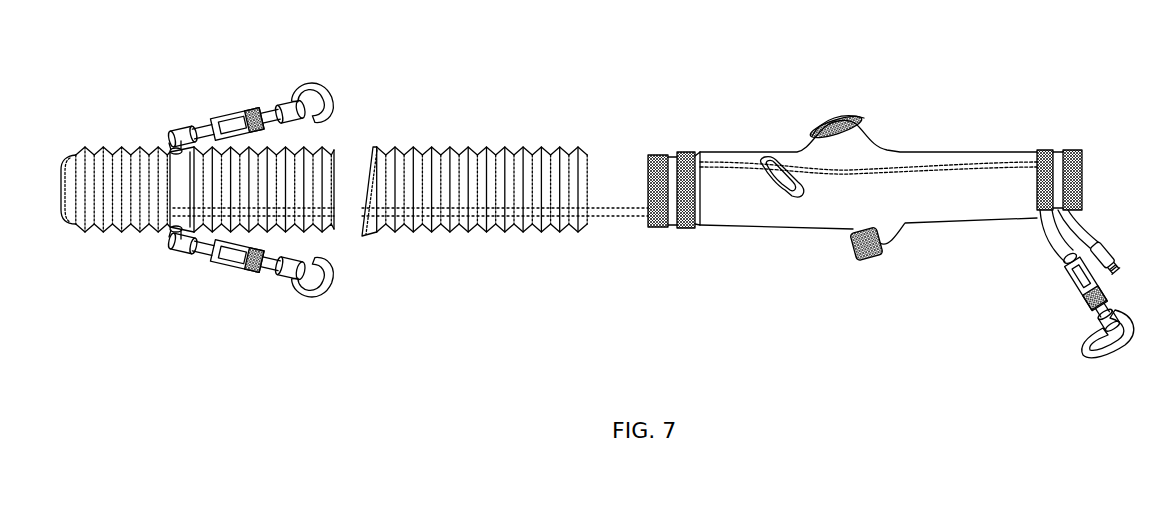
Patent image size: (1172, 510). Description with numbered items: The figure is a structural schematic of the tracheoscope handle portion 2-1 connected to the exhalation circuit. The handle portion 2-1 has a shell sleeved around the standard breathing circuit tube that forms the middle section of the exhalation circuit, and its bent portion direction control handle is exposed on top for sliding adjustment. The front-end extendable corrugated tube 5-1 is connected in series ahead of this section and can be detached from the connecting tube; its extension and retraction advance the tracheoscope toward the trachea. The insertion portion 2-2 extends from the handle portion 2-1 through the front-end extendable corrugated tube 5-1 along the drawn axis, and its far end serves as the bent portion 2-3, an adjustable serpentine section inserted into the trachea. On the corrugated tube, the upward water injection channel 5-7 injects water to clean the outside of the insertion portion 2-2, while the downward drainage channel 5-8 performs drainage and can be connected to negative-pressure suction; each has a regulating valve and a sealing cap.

The handle portion 2-1 is at (786, 212).
The insertion portion 2-2 is at (627, 212).
The bent portion 2-3 is at (207, 210).
The front-end extendable corrugated tube 5-1 is at (398, 225).
The water injection channel 5-7 is at (292, 98).
The drainage channel 5-8 is at (298, 272).